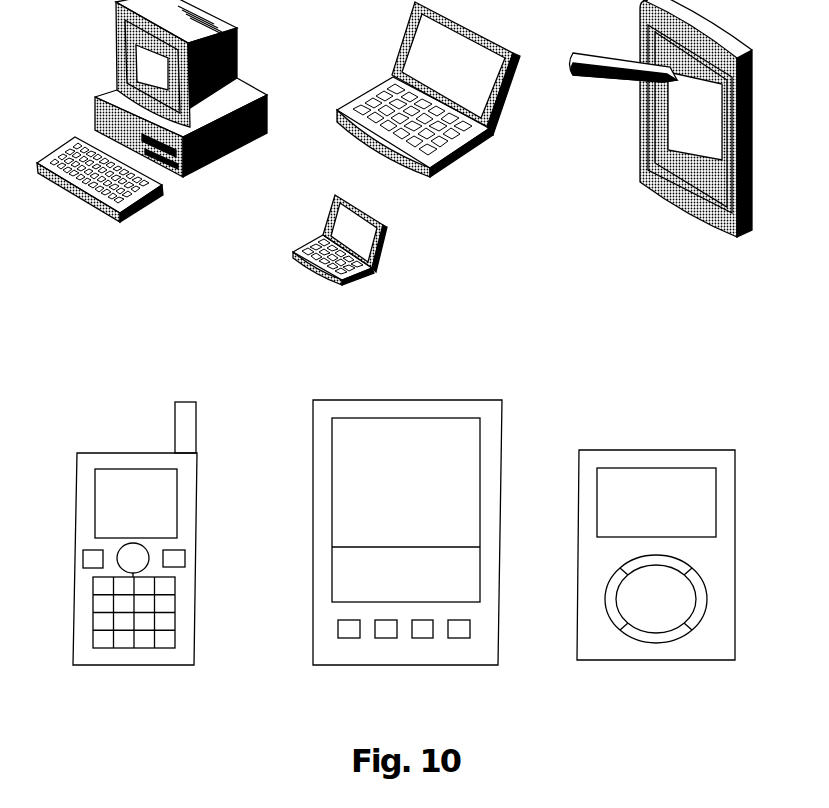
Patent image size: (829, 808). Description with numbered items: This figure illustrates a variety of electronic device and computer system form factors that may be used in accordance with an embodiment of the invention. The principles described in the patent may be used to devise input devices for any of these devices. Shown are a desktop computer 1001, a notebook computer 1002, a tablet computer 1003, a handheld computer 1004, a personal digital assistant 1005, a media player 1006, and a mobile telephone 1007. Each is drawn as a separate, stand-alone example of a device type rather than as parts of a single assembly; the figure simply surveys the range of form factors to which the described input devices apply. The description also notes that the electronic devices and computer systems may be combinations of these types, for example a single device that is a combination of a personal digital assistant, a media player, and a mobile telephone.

The desktop computer 1001 is at (238, 147).
The notebook computer 1002 is at (463, 152).
The tablet computer 1003 is at (640, 182).
The handheld computer 1004 is at (360, 280).
The personal digital assistant 1005 is at (373, 665).
The media player 1006 is at (600, 660).
The mobile telephone 1007 is at (100, 665).